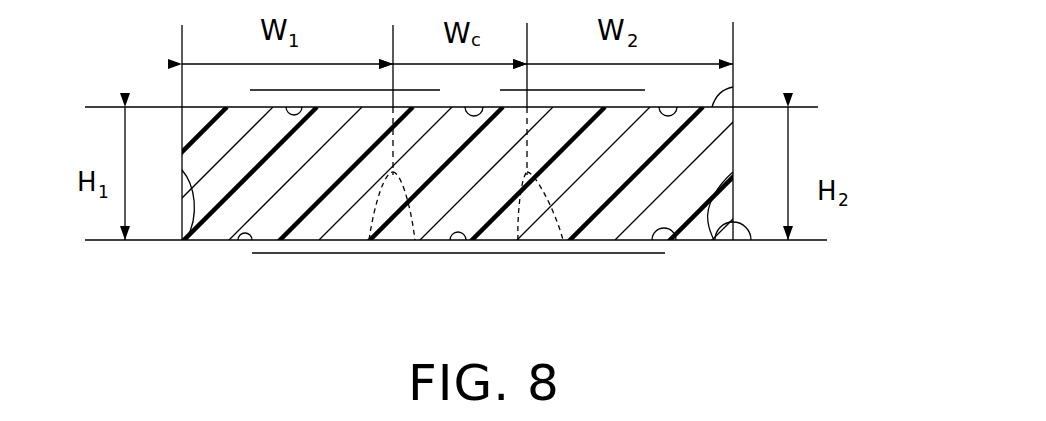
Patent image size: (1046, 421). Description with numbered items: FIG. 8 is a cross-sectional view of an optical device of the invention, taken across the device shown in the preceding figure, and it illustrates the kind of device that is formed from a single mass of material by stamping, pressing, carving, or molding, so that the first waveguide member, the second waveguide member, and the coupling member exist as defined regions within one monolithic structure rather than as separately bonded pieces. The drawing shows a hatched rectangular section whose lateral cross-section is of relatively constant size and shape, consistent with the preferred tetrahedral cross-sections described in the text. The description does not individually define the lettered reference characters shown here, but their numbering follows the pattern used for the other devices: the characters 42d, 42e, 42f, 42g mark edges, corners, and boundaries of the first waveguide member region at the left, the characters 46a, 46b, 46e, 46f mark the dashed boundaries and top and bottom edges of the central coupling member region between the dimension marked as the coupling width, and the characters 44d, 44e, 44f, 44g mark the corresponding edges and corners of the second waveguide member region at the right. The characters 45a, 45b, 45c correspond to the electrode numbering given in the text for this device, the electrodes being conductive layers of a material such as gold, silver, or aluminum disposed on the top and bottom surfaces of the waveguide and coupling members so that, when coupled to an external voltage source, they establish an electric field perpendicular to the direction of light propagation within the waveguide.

The first section dashed boundary 42d is at (369, 240).
The first section outer corner 42e is at (186, 240).
The first section top edge 42f is at (304, 107).
The first section bottom edge 42g is at (241, 241).
The second section dashed boundary 44d is at (563, 240).
The second section outer corner 44e is at (718, 241).
The second section top edge 44f is at (676, 105).
The second section bottom edge 44g is at (676, 240).
The top surface left portion 45a is at (252, 90).
The top surface right corner 45b is at (733, 87).
The bottom surface 45c is at (648, 254).
The center section left dashed boundary 46a is at (415, 240).
The center section right dashed boundary 46b is at (518, 240).
The center section top edge 46e is at (482, 105).
The center section bottom edge 46f is at (466, 240).